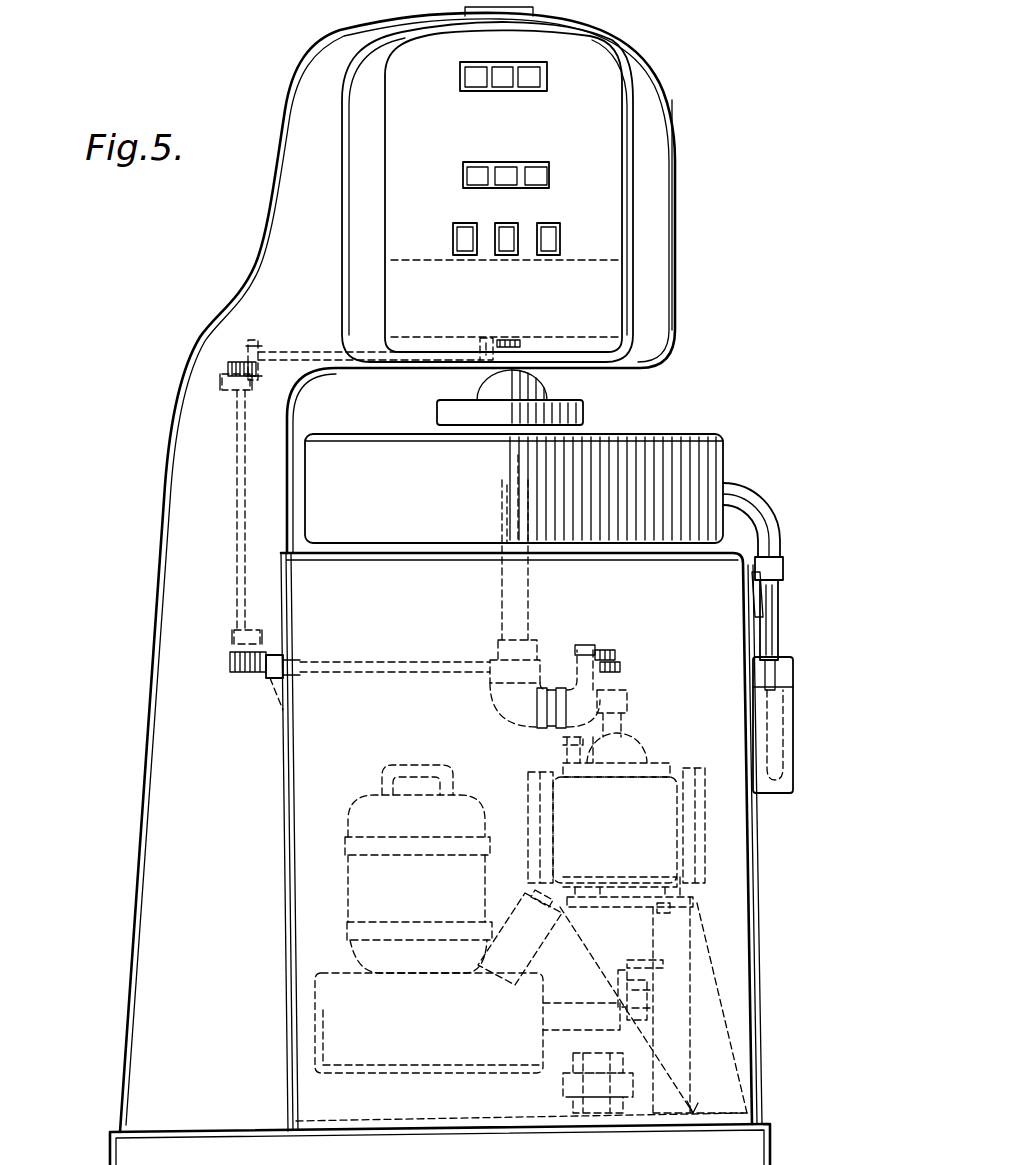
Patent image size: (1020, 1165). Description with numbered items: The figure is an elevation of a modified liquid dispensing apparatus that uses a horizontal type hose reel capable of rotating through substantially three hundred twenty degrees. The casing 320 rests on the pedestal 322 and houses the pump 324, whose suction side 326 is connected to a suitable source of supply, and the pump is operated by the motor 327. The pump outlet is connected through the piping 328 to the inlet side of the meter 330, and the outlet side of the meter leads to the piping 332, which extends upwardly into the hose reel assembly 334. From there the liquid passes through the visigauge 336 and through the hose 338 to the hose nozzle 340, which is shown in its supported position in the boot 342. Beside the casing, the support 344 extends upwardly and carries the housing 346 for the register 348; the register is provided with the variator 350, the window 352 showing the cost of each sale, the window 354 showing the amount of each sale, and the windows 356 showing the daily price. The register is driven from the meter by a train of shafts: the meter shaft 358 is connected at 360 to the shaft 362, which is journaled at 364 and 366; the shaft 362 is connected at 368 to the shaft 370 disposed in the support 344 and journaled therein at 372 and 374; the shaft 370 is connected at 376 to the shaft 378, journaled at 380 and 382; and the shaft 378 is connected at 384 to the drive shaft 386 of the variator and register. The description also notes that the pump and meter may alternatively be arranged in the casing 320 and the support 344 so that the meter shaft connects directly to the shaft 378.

The casing 320 is at (757, 869).
The pedestal 322 is at (767, 1122).
The pump 324 is at (340, 1015).
The suction side 326 is at (567, 1083).
The motor 327 is at (367, 878).
The piping 328 is at (653, 940).
The meter 330 is at (697, 833).
The piping 332 is at (513, 707).
The hose reel assembly 334 is at (723, 437).
The visigauge 336 is at (547, 385).
The hose 338 is at (752, 497).
The hose nozzle 340 is at (780, 607).
The boot 342 is at (792, 743).
The support 344 is at (165, 748).
The housing 346 is at (667, 155).
The register 348 is at (625, 210).
The variator 350 is at (627, 288).
The window 352 is at (547, 78).
The window 354 is at (549, 170).
The windows 356 is at (553, 222).
The meter shaft 358 is at (623, 680).
The connection 360 is at (617, 662).
The shaft 362 is at (370, 662).
The journal 364 is at (585, 645).
The journal 366 is at (283, 647).
The connection 368 is at (250, 668).
The shaft 370 is at (240, 512).
The journal 372 is at (237, 640).
The journal 374 is at (222, 387).
The connection 376 is at (228, 368).
The shaft 378 is at (300, 352).
The journal 380 is at (256, 342).
The journal 382 is at (490, 337).
The connection 384 is at (537, 352).
The drive shaft 386 is at (512, 338).